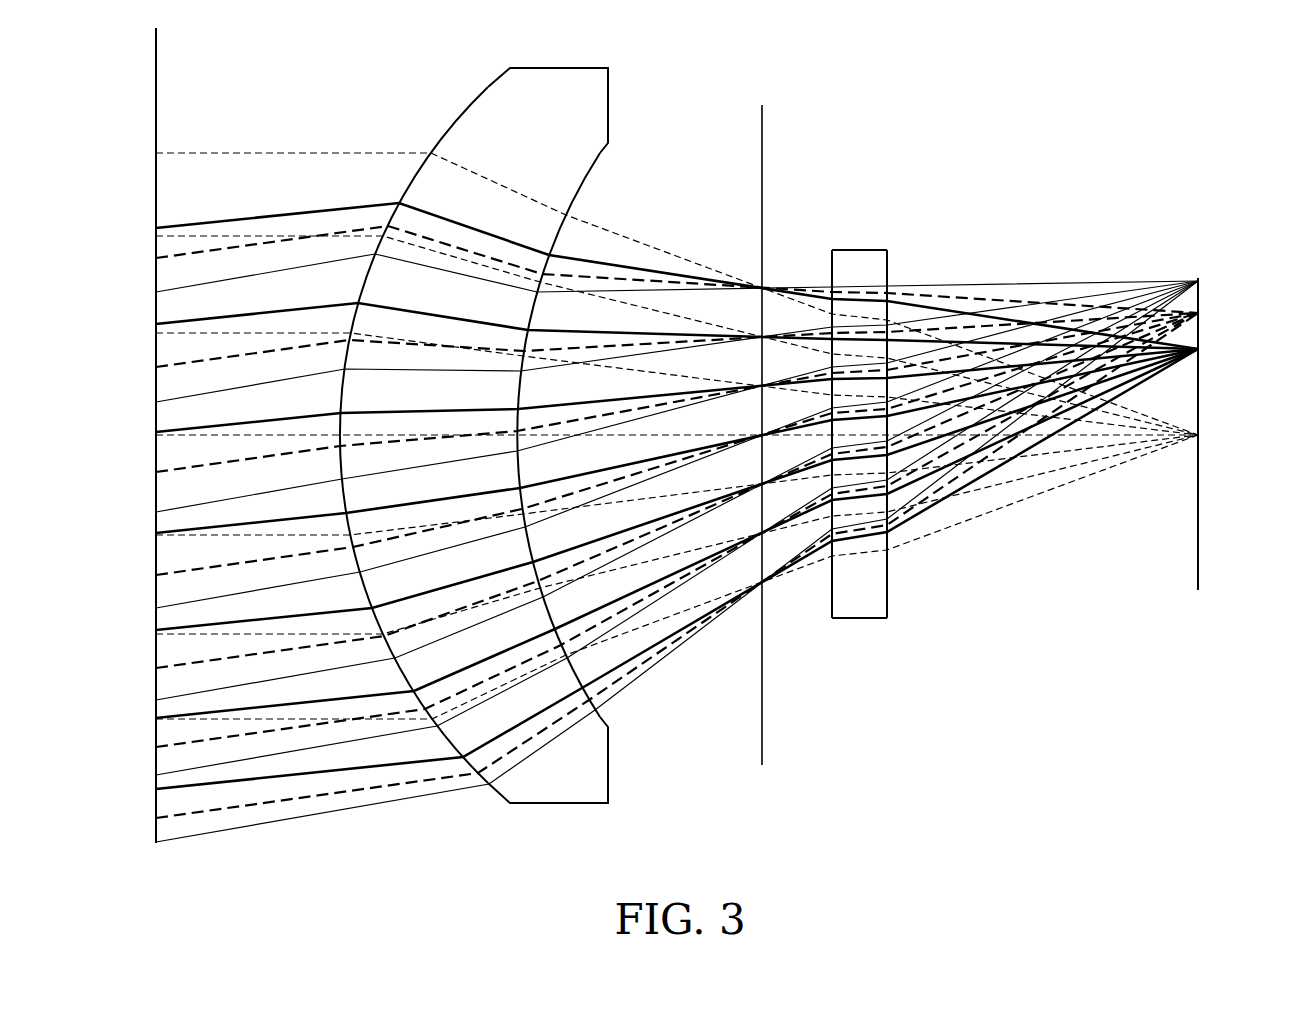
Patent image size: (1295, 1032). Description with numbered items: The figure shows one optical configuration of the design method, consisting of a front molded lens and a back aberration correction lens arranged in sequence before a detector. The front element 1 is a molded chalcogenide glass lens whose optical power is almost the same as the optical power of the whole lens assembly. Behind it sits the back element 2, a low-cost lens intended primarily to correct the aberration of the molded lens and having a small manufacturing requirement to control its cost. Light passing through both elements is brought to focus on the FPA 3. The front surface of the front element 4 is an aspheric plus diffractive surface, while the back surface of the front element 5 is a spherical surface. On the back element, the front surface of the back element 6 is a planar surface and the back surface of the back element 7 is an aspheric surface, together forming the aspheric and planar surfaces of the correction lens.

The front element 1 is at (511, 435).
The back element 2 is at (872, 427).
The FPA 3 is at (1200, 285).
The front surface of the front element 4 is at (448, 740).
The back surface of the front element 5 is at (552, 615).
The front surface of the back element 6 is at (832, 580).
The back surface of the back element 7 is at (887, 582).